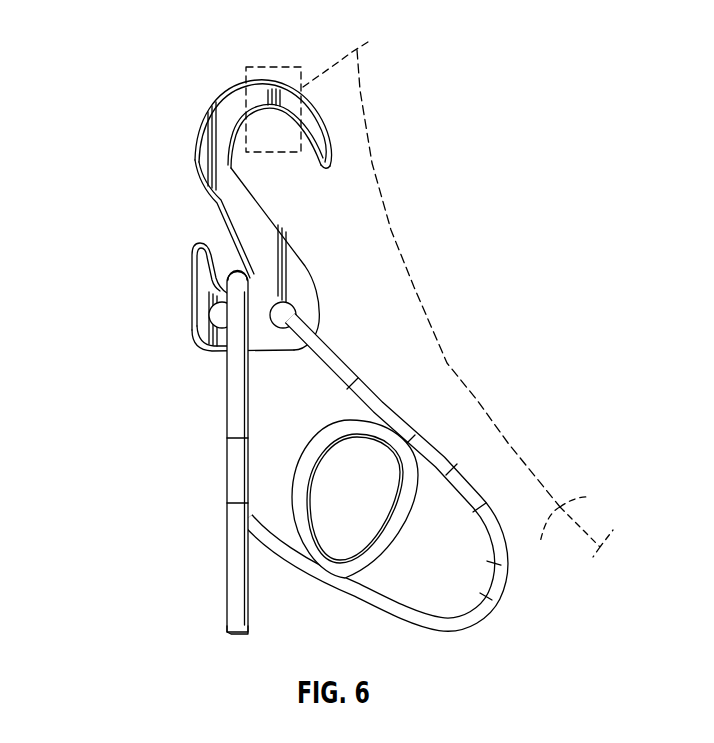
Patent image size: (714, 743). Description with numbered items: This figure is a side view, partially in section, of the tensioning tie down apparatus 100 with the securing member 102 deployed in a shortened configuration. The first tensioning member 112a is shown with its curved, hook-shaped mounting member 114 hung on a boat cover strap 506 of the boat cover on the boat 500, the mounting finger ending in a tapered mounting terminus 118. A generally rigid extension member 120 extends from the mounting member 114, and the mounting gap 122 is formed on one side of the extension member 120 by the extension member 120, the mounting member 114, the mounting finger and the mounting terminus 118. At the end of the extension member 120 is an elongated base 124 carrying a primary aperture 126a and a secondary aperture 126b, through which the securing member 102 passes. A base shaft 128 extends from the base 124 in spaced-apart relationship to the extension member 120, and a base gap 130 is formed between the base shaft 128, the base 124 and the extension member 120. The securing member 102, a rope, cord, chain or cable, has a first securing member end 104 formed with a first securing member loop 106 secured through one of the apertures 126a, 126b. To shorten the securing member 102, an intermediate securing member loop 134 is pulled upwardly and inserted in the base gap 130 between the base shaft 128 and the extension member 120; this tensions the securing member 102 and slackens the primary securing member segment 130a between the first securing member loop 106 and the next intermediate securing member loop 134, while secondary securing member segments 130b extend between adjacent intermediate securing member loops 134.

The tensioning tie down apparatus 100 is at (318, 338).
The securing member 102 is at (348, 428).
The first securing member end 104 is at (412, 435).
The first securing member loop 106 is at (357, 378).
The first tensioning member 112a is at (270, 237).
The mounting member 114 is at (241, 104).
The mounting terminus 118 is at (338, 146).
The extension member 120 is at (220, 207).
The mounting gap 122 is at (282, 173).
The base 124 is at (262, 346).
The primary aperture 126a is at (210, 314).
The secondary aperture 126b is at (297, 309).
The base shaft 128 is at (198, 272).
The base gap 130 is at (210, 238).
The primary securing member segment 130a is at (487, 592).
The secondary securing member segment 130b is at (227, 585).
The intermediate securing member loop 134 is at (230, 416).
The boat 500 is at (485, 312).
The boat cover strap 506 is at (352, 52).